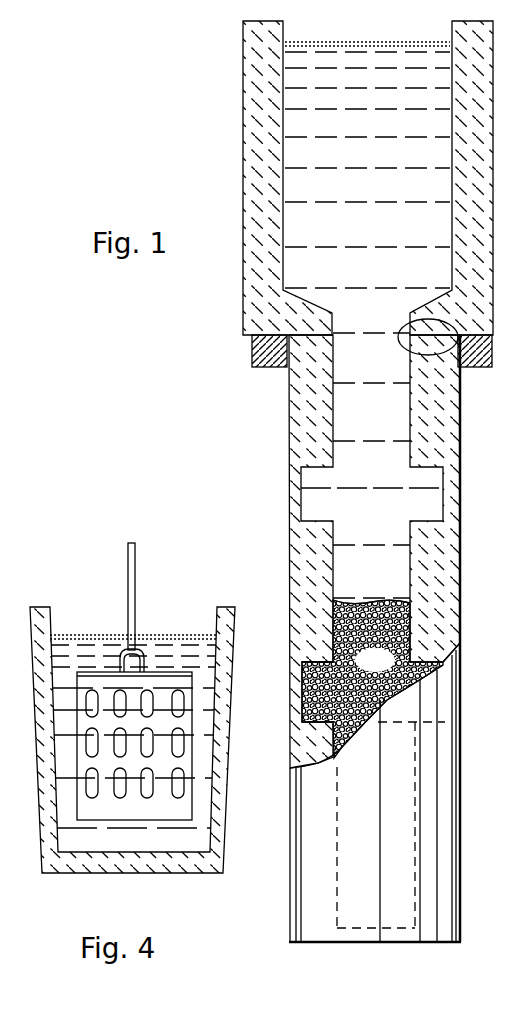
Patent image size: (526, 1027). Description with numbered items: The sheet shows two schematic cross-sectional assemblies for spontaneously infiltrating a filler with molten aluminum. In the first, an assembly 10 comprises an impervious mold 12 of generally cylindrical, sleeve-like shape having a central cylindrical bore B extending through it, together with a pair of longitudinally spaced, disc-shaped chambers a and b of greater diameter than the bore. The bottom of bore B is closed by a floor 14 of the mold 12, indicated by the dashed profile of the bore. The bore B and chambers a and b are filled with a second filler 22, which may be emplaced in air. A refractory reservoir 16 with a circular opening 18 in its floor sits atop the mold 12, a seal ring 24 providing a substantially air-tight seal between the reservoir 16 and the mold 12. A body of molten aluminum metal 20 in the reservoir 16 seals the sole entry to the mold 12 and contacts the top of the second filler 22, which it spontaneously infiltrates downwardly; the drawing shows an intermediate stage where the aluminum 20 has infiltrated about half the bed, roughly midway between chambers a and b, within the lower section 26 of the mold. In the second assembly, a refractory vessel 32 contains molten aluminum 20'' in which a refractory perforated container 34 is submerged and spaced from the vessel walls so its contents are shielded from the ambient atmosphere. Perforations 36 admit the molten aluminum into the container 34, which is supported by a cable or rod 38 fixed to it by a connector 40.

In FIG. 1, the assembly 10 is at (212, 370).
In FIG. 1, the impervious mold 12 is at (445, 546).
In FIG. 1, the floor 14 is at (375, 942).
In FIG. 1, the refractory reservoir 16 is at (256, 174).
In FIG. 1, the circular opening 18 is at (492, 343).
In FIG. 1, the molten aluminum metal 20 is at (367, 165).
In FIG. 1, the second filler 22 is at (388, 671).
In FIG. 1, the seal ring 24 is at (266, 370).
In FIG. 1, the lower section 26 is at (525, 716).
In FIG. 1, the disc-shaped chamber a is at (322, 497).
In FIG. 1, the disc-shaped chamber b is at (302, 697).
In FIG. 1, the central cylindrical bore B is at (388, 425).
In FIG. 4, the refractory vessel 32 is at (48, 826).
In FIG. 4, the refractory perforated container 34 is at (158, 810).
In FIG. 4, the perforations 36 is at (180, 742).
In FIG. 4, the cable or rod 38 is at (130, 603).
In FIG. 4, the connector 40 is at (118, 667).
In FIG. 4, the molten aluminum 20'' is at (133, 704).